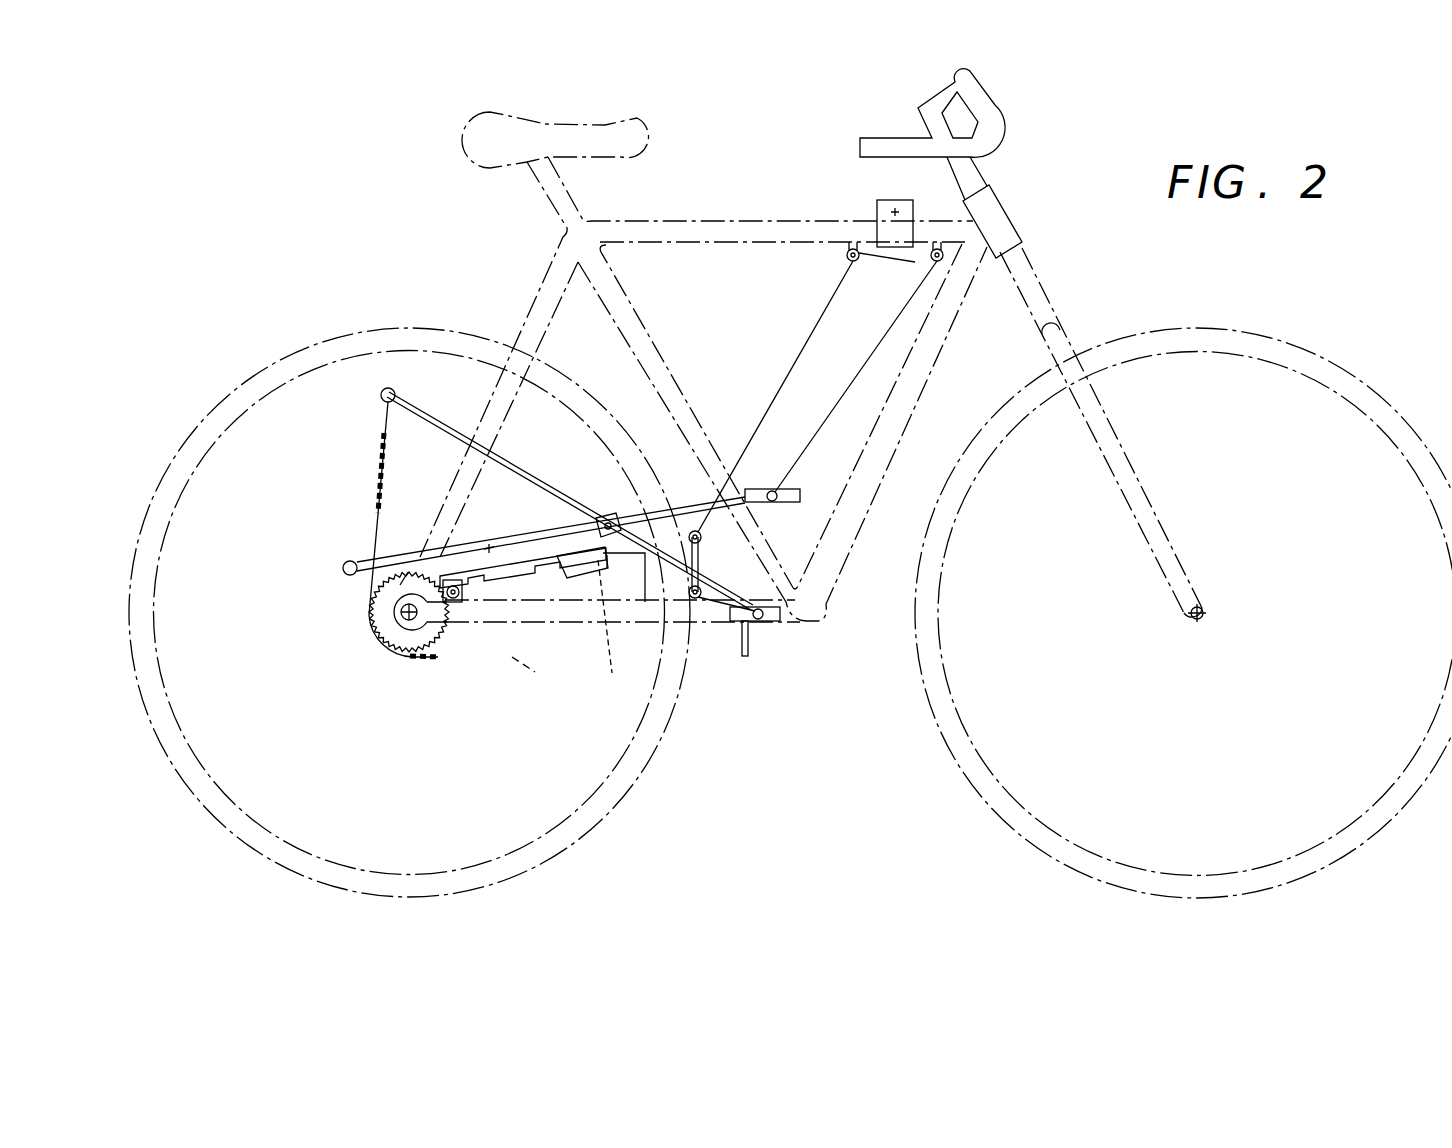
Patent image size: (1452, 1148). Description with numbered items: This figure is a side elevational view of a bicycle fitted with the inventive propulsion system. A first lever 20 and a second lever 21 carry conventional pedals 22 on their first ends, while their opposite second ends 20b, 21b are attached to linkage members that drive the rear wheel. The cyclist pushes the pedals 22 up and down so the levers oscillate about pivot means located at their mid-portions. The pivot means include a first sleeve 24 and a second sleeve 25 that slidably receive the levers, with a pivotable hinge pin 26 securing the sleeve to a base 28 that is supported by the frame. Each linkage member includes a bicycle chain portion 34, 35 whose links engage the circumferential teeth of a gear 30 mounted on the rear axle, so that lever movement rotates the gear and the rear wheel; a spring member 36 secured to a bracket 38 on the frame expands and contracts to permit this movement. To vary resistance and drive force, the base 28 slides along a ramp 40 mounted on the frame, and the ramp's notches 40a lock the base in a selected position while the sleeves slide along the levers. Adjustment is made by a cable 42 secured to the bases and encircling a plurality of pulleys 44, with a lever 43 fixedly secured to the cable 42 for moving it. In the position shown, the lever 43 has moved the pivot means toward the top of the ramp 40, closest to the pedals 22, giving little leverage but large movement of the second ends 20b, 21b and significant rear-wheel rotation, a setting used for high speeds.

The first lever 20 is at (530, 480).
The second end of first lever 20b is at (389, 388).
The second lever 21 is at (537, 532).
The second end of second lever 21b is at (343, 564).
The pedals 22 is at (800, 497).
The first sleeve 24 is at (600, 523).
The second sleeve 25 is at (617, 515).
The hinge pin 26 is at (597, 562).
The base 28 is at (562, 545).
The first gear 30 is at (385, 626).
The bicycle chain portion 34 is at (410, 658).
The bicycle chain portion 35 is at (372, 488).
The spring member 36 is at (535, 670).
The bracket 38 is at (752, 636).
The ramp 40 is at (623, 588).
The notches 40a is at (560, 560).
The cable 42 is at (800, 340).
The lever 43 is at (863, 173).
The pulleys 44 is at (848, 258).